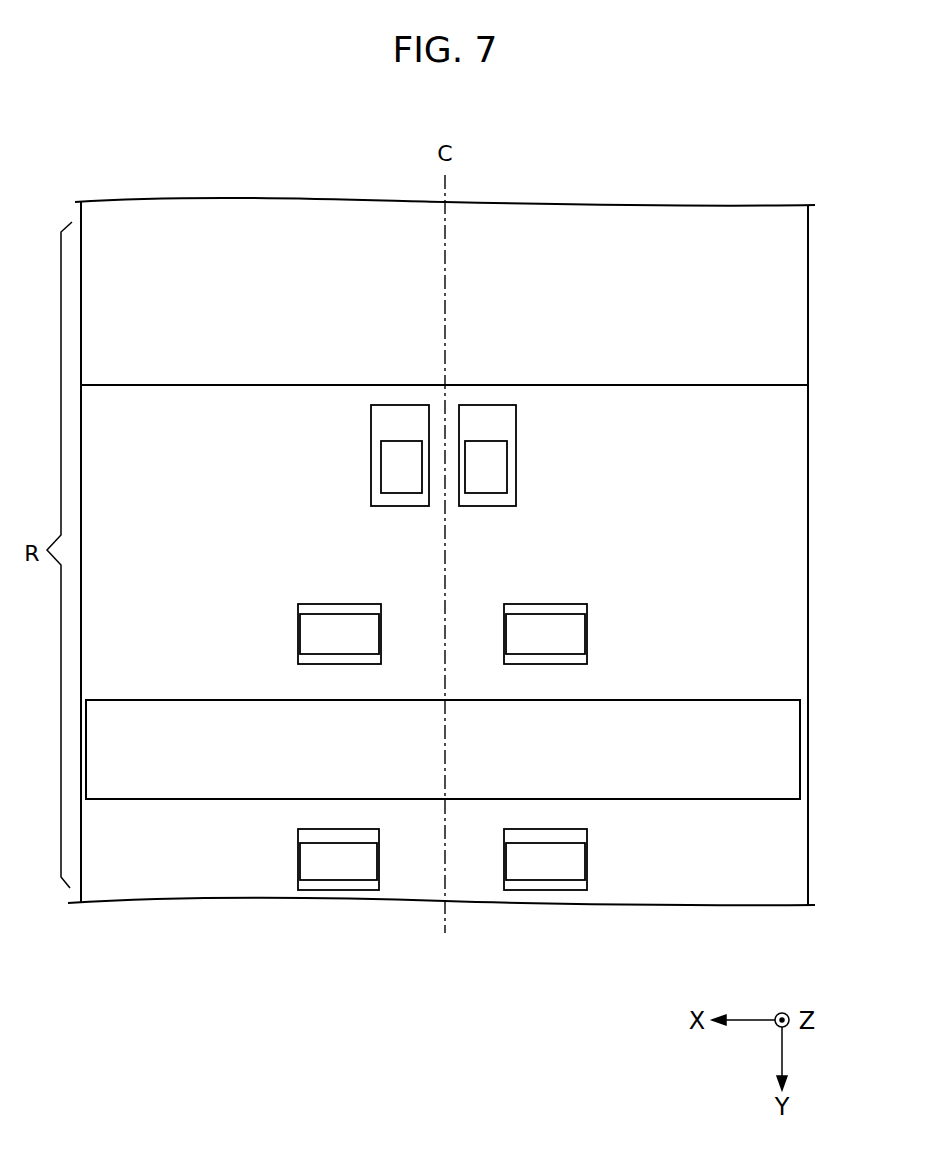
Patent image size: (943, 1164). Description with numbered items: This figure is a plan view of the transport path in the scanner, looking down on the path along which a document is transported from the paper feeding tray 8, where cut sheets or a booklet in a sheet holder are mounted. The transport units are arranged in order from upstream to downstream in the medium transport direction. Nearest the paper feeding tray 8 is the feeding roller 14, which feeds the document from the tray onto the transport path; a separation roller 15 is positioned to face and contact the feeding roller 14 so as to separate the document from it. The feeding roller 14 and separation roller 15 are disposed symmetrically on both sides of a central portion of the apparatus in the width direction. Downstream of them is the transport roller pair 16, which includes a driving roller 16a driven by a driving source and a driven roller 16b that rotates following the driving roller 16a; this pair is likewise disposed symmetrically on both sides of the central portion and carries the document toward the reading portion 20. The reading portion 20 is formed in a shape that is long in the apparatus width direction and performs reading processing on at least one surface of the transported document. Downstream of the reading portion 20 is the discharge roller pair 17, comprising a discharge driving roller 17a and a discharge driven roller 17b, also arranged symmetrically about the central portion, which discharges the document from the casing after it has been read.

The paper feeding tray 8 is at (786, 332).
The feeding roller 14 is at (371, 405).
The separation roller 15 is at (400, 441).
The transport roller pair 16 is at (442, 593).
The driving roller 16a is at (343, 604).
The driven roller 16b is at (307, 612).
The discharge roller pair 17 is at (445, 850).
The discharge driving roller 17a is at (442, 862).
The discharge driven roller 17b is at (320, 843).
The reading portion 20 is at (774, 700).